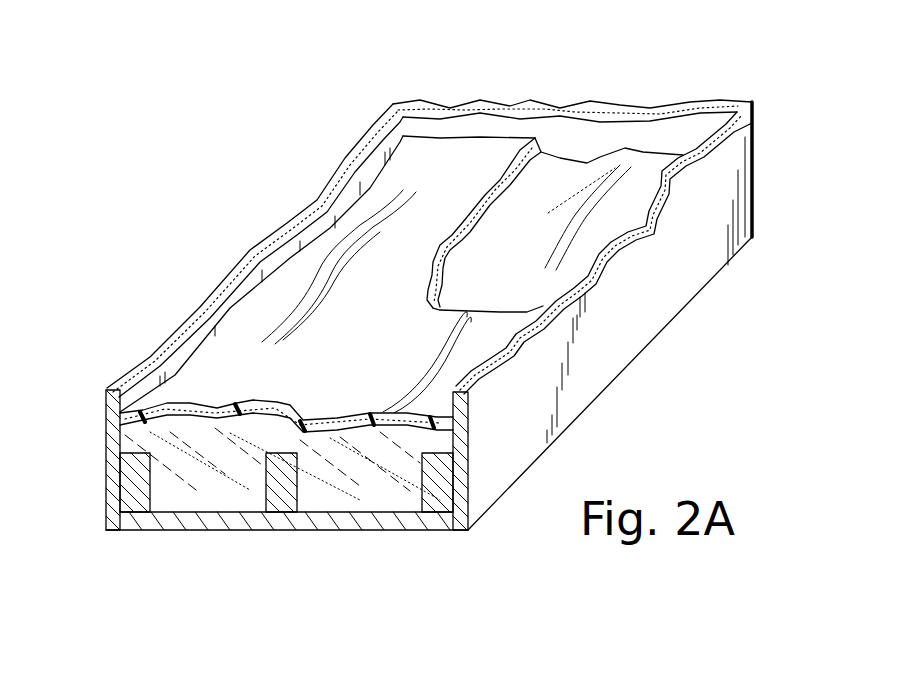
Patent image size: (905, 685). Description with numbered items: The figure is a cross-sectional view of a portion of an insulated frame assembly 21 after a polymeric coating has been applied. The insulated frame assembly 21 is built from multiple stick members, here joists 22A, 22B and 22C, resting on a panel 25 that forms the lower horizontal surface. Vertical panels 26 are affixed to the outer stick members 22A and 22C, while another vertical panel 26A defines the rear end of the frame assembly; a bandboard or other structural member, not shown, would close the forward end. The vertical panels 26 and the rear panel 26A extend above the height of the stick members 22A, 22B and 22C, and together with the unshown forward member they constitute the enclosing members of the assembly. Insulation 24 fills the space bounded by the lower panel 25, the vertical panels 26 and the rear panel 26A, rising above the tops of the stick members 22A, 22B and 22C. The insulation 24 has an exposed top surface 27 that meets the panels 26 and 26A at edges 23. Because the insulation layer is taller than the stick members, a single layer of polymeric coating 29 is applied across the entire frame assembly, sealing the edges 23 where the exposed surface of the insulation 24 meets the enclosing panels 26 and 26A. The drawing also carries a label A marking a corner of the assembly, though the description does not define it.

The insulated frame assembly 21 is at (693, 325).
The stick member 22A is at (137, 500).
The stick member 22B is at (283, 495).
The stick member 22C is at (432, 483).
The edges 23 is at (630, 147).
The insulation 24 is at (612, 217).
The panel 25 is at (337, 520).
The vertical panels 26 is at (240, 263).
The vertical panel 26A is at (575, 140).
The exposed top surface 27 is at (262, 413).
The polymeric coating 29 is at (368, 272).
The corner point A is at (757, 123).